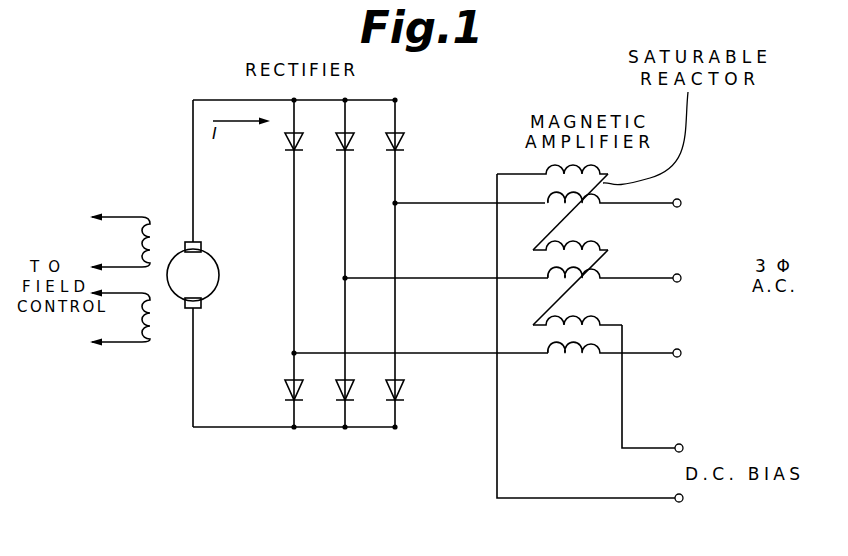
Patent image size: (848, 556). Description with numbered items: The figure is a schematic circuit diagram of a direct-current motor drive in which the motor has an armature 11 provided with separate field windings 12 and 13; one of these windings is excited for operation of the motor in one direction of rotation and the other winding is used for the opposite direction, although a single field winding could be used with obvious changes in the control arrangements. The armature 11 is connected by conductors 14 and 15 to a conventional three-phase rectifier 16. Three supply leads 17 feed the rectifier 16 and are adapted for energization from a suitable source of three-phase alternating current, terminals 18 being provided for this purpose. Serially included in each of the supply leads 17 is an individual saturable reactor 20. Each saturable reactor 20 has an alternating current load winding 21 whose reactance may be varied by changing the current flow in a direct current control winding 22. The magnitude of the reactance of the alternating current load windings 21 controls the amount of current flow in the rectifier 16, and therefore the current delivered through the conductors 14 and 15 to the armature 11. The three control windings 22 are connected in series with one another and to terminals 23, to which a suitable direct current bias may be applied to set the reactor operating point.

The armature 11 is at (216, 263).
The field winding 12 is at (151, 234).
The field winding 13 is at (152, 342).
The conductor 14 is at (232, 100).
The conductor 15 is at (233, 427).
The three-phase rectifier 16 is at (372, 252).
The supply lead 17 is at (428, 203).
The terminal 18 is at (681, 206).
The saturable reactor 20 is at (586, 213).
The alternating current load winding 21 is at (553, 201).
The direct current control winding 22 is at (605, 167).
The terminal 23 is at (683, 446).